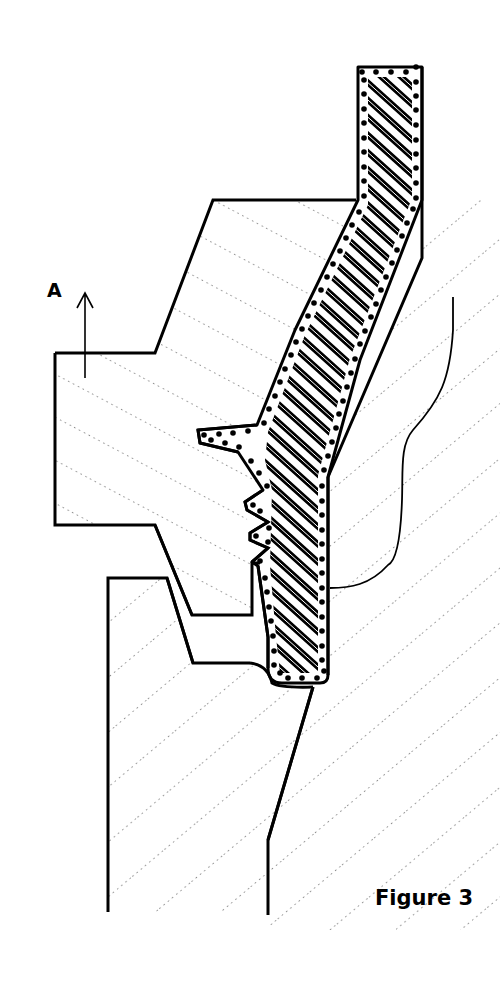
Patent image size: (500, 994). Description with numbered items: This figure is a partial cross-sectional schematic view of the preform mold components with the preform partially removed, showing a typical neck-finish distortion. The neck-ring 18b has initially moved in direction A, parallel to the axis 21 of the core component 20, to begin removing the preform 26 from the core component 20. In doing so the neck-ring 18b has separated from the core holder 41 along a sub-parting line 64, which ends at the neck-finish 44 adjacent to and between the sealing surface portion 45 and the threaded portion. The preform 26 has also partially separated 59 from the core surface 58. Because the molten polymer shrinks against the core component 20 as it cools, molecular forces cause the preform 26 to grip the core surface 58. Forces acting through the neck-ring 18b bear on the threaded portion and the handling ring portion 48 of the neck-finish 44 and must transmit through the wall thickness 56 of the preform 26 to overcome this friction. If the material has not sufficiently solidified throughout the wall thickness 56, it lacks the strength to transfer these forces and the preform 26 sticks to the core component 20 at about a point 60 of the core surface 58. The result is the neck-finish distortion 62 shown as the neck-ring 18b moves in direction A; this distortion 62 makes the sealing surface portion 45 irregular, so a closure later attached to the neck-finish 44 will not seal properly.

The neck-ring component 18b is at (224, 258).
The core component 20 is at (497, 440).
The axis 21 is at (499, 89).
The preform 26 is at (300, 310).
The core holder 41 is at (195, 842).
The neck-finish 44 is at (230, 519).
The sealing surface portion 45 is at (283, 690).
The handling ring portion 48 is at (200, 443).
The wall thickness 56 is at (330, 488).
The core surface 58 is at (398, 313).
The partial separation 59 is at (378, 323).
The point of core surface 60 is at (331, 641).
The neck-finish distortion 62 is at (270, 630).
The sub-parting line 64 is at (183, 630).